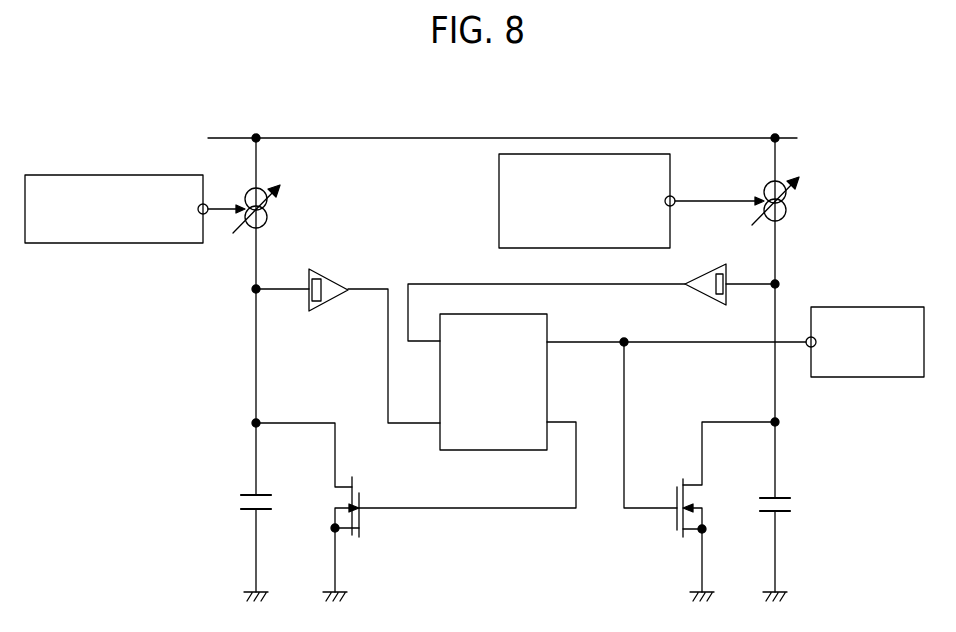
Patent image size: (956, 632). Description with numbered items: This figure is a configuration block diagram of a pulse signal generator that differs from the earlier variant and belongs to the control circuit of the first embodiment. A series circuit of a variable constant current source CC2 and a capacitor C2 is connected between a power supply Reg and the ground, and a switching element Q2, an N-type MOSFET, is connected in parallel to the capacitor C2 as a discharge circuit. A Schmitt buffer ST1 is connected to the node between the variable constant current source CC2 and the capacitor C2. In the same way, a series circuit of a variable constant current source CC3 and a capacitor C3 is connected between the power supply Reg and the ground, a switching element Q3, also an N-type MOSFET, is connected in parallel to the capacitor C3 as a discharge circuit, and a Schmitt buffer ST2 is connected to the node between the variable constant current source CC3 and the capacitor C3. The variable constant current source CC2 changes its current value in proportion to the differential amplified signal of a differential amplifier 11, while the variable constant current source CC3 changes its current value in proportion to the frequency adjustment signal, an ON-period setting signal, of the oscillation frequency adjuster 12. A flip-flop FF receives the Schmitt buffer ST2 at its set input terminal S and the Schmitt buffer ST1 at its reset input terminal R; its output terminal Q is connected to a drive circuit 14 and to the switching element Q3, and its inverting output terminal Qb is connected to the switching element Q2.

The differential amplifier 11 is at (130, 174).
The oscillation frequency adjuster 12 is at (498, 197).
The drive circuit 14 is at (868, 307).
The variable constant current source CC2 is at (277, 209).
The variable constant current source CC3 is at (795, 201).
The Schmitt buffer ST1 is at (327, 276).
The Schmitt buffer ST2 is at (690, 280).
The flip-flop FF is at (484, 454).
The switching element Q2 is at (414, 505).
The switching element Q3 is at (699, 465).
The capacitor C2 is at (273, 504).
The capacitor C3 is at (792, 504).
The power supply Reg is at (525, 139).